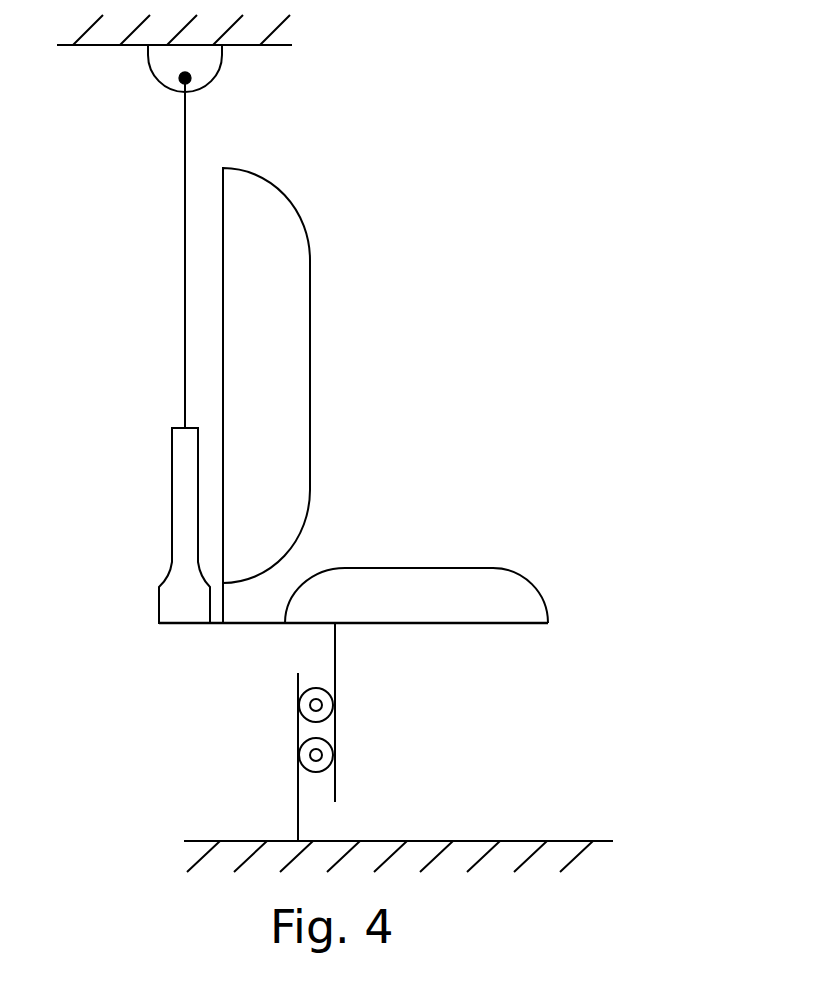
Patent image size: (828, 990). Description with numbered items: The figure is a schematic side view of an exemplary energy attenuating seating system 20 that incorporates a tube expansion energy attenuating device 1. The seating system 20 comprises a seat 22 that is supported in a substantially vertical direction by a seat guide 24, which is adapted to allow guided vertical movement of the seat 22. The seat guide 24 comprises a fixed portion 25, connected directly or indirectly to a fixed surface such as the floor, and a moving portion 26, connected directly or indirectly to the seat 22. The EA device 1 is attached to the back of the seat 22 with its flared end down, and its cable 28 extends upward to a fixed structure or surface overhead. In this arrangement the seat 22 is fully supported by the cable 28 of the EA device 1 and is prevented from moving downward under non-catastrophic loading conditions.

The EA device 1 is at (172, 540).
The energy attenuating seating system 20 is at (533, 197).
The seat 22 is at (418, 568).
The seat guide 24 is at (424, 731).
The fixed portion 25 is at (298, 723).
The moving portion 26 is at (335, 785).
The cable 28 is at (184, 213).